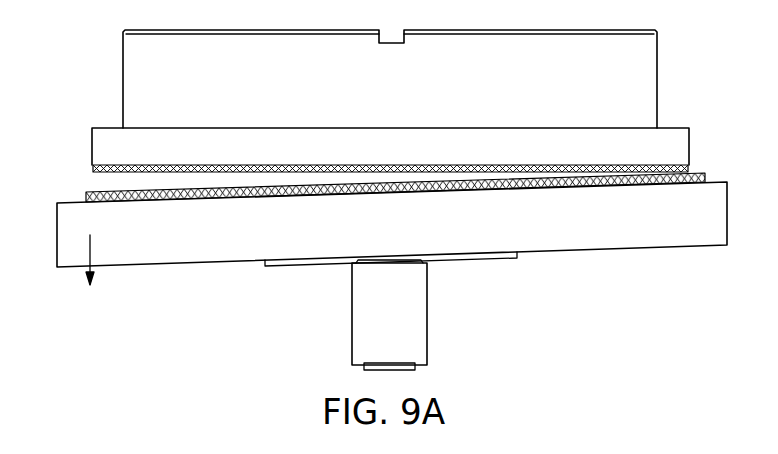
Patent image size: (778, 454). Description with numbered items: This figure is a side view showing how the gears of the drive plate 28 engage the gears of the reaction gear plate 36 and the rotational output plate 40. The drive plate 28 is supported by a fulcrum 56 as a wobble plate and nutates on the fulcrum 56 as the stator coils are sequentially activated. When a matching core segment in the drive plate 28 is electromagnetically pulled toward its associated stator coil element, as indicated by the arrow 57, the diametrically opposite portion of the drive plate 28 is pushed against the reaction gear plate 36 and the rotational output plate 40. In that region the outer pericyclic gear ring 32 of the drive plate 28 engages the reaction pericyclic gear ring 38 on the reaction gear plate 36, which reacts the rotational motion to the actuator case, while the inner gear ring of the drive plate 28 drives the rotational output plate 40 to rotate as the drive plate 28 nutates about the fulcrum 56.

The rotational output plate 40 is at (657, 58).
The reaction gear plate 36 is at (680, 147).
The reaction pericyclic gear ring 38 is at (96, 178).
The outer pericyclic gear ring 32 is at (86, 196).
The drive plate 28 is at (714, 237).
The fulcrum 56 is at (420, 321).
The arrow 57 is at (90, 250).